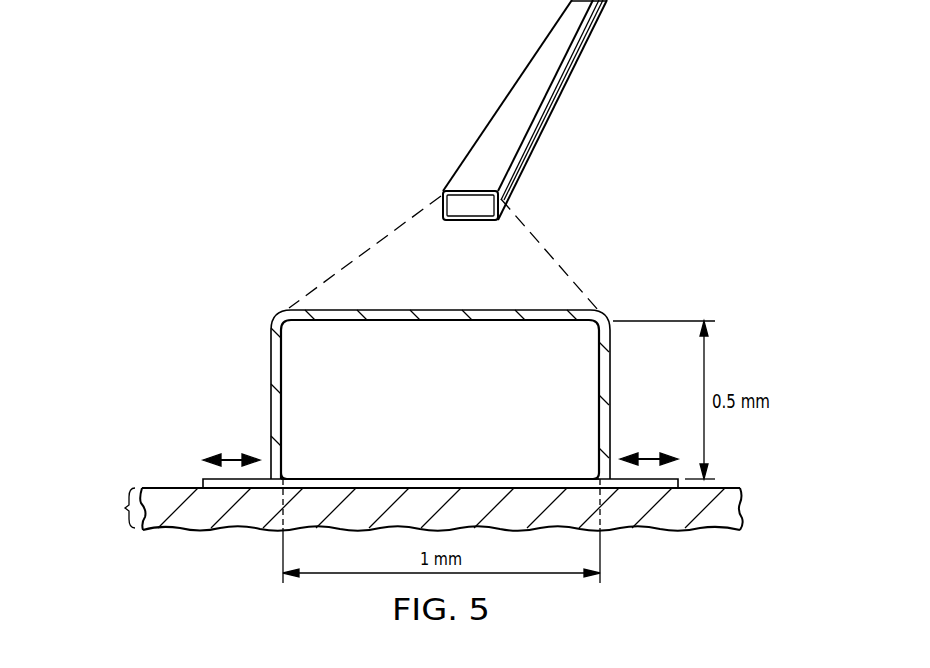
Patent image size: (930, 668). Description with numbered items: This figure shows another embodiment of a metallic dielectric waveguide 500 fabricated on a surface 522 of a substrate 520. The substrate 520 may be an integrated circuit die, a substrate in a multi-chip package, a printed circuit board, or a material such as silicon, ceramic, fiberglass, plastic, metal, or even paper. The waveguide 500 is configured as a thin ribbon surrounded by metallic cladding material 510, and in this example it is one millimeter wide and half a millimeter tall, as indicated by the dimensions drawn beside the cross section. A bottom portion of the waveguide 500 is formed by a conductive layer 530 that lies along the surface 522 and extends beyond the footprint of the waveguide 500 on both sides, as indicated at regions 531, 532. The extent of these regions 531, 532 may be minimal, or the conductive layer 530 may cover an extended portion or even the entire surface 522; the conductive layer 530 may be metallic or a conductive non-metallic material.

The metallic waveguide 500 is at (515, 93).
The metallic cladding material 510 is at (441, 318).
The substrate 520 is at (412, 509).
The surface 522 is at (183, 486).
The conductive layer 530 is at (441, 483).
The region 531 is at (229, 457).
The region 532 is at (650, 457).